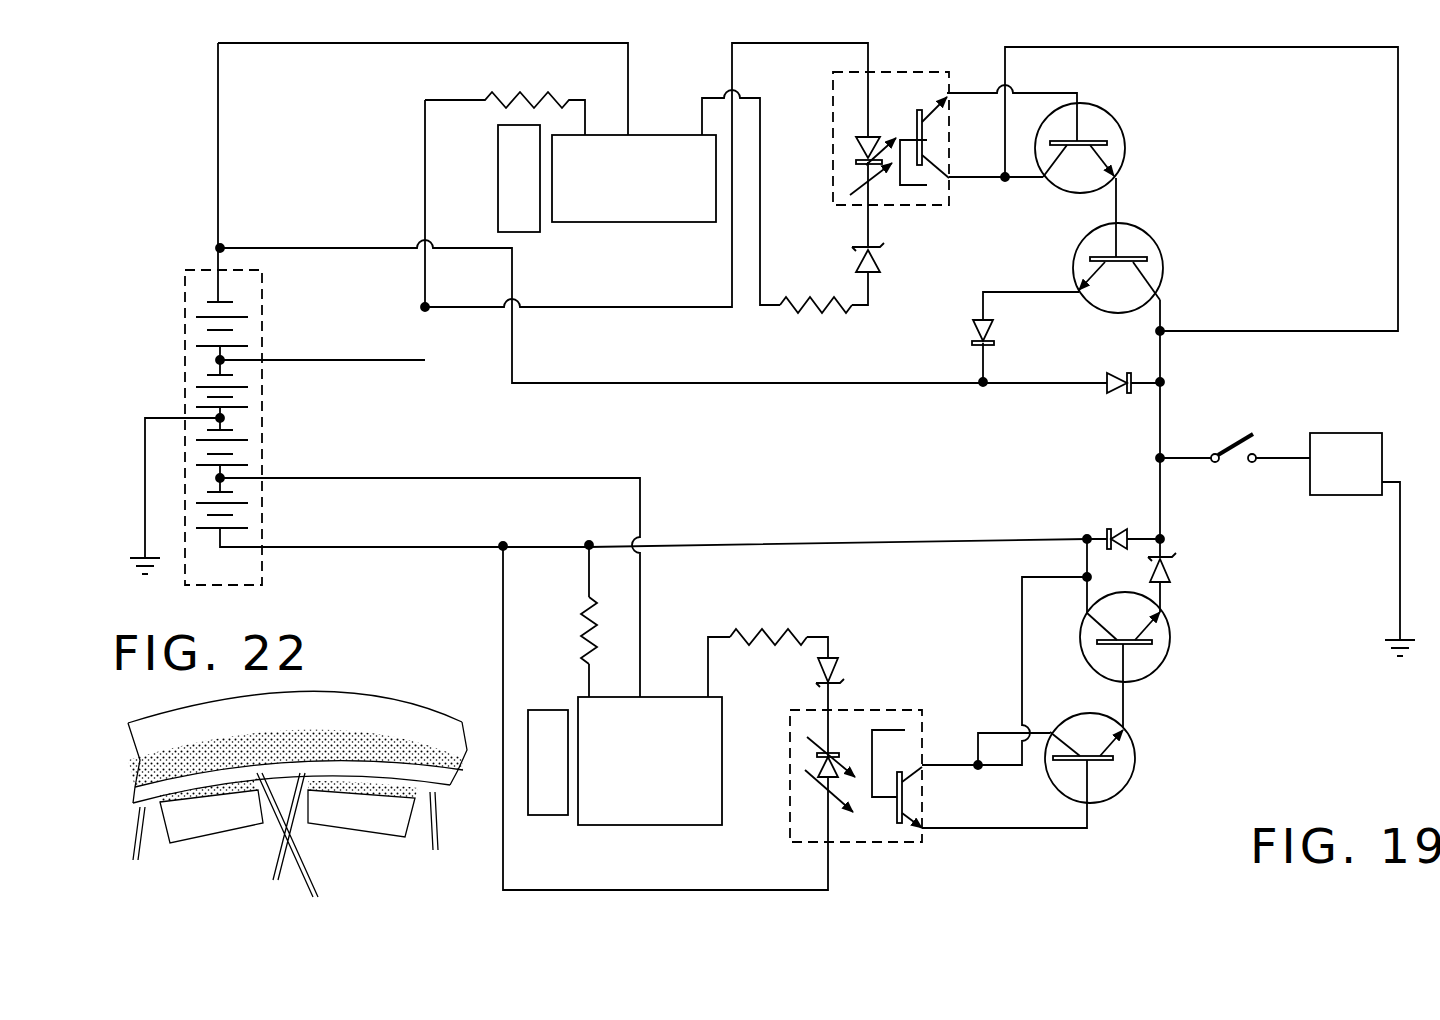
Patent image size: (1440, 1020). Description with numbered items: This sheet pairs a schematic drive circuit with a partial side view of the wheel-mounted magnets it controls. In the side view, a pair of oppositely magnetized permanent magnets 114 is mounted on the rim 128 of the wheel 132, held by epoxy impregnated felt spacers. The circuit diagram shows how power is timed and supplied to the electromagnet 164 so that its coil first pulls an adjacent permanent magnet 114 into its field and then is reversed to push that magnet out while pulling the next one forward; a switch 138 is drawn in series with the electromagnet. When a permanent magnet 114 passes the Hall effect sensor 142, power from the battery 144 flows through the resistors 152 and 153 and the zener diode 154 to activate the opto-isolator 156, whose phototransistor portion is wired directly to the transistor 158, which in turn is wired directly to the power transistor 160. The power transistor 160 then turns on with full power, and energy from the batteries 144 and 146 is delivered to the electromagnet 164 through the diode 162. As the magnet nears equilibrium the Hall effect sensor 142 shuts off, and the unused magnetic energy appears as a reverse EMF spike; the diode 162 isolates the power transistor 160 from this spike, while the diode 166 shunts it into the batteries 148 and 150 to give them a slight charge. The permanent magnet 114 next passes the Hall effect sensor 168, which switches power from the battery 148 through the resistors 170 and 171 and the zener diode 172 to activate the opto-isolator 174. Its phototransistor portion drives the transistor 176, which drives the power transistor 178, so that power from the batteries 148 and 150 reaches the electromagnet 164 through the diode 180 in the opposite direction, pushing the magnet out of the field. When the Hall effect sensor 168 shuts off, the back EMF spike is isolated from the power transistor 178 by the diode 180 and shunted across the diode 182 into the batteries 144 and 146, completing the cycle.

In FIG. 19, the permanent magnet 114 is at (520, 187).
In FIG. 22, the permanent magnet 114 is at (185, 820).
In FIG. 22, the rim 128 is at (400, 773).
In FIG. 22, the wheel 132 is at (322, 715).
In FIG. 19, the switch 138 is at (1233, 455).
In FIG. 19, the Hall effect sensor 142 is at (580, 198).
In FIG. 19, the battery 144 is at (205, 330).
In FIG. 19, the battery 146 is at (212, 378).
In FIG. 19, the battery 148 is at (216, 520).
In FIG. 19, the battery 150 is at (240, 498).
In FIG. 19, the resistor 152 is at (528, 95).
In FIG. 19, the resistor 153 is at (822, 310).
In FIG. 19, the zener diode 154 is at (872, 266).
In FIG. 19, the opto-isolator 156 is at (883, 92).
In FIG. 19, the transistor 158 is at (1095, 118).
In FIG. 19, the power transistor 160 is at (1143, 246).
In FIG. 19, the diode 162 is at (996, 330).
In FIG. 19, the electromagnet 164 is at (1357, 443).
In FIG. 19, the diode 166 is at (1128, 393).
In FIG. 19, the Hall effect sensor 168 is at (645, 813).
In FIG. 19, the resistor 170 is at (590, 654).
In FIG. 19, the resistor 171 is at (790, 640).
In FIG. 19, the zener diode 172 is at (838, 660).
In FIG. 19, the opto-isolator 174 is at (886, 718).
In FIG. 19, the transistor 176 is at (1115, 771).
In FIG. 19, the power transistor 178 is at (1150, 659).
In FIG. 19, the diode 180 is at (1172, 578).
In FIG. 19, the diode 182 is at (1133, 522).